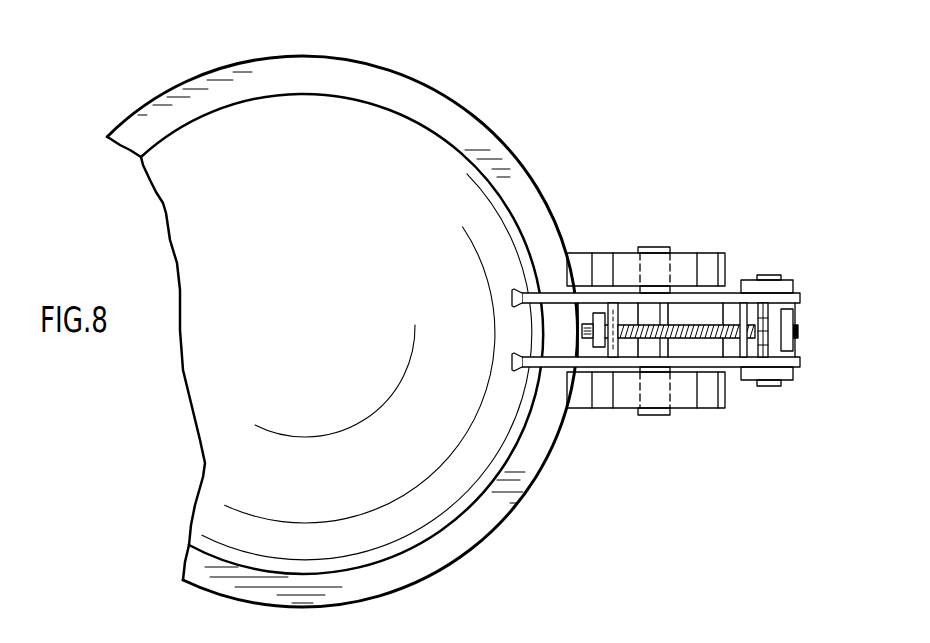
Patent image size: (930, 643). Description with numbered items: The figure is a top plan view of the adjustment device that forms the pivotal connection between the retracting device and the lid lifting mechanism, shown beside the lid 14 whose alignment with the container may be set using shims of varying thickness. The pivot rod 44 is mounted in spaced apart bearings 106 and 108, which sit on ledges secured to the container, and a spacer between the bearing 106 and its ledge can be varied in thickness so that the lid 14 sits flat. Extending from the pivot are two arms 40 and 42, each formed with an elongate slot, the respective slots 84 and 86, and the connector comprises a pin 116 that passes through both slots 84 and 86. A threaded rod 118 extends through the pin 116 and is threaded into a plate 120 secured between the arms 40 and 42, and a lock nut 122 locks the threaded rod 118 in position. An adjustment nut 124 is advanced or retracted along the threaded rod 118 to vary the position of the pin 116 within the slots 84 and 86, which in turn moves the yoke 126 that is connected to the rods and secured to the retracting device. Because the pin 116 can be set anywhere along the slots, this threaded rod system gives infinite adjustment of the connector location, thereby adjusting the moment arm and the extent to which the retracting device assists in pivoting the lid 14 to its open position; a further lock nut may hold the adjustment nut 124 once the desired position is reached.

The lid 14 is at (425, 142).
The arm 42 is at (521, 293).
The arm 40 is at (521, 372).
The pivot rod 44 is at (657, 247).
The bearing 108 is at (703, 262).
The bearing 106 is at (708, 408).
The threaded rod 118 is at (690, 338).
The lock nut 122 is at (596, 318).
The plate 120 is at (612, 350).
The yoke 126 is at (793, 340).
The slot 86 is at (731, 298).
The pin 116 is at (770, 275).
The slot 84 is at (732, 367).
The adjustment nut 124 is at (790, 348).